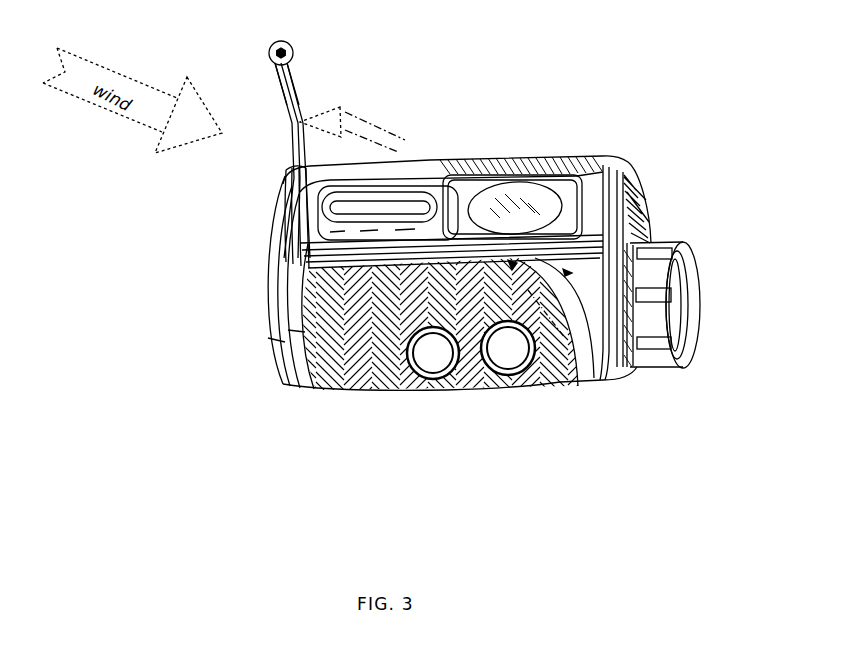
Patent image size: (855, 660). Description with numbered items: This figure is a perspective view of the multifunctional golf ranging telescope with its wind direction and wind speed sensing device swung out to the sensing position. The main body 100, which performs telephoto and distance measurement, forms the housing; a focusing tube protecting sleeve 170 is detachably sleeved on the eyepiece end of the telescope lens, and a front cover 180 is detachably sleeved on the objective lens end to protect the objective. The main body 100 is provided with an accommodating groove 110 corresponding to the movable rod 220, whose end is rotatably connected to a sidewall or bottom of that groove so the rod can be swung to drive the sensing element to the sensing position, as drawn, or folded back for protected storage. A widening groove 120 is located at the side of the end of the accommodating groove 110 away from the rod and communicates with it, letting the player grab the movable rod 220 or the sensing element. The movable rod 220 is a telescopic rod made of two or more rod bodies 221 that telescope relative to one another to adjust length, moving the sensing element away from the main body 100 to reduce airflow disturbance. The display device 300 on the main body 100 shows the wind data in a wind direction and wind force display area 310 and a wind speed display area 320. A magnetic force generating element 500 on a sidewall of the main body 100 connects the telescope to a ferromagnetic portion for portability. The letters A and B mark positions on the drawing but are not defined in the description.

The main body 100 is at (607, 380).
The accommodating groove 110 is at (517, 346).
The widening groove 120 is at (600, 372).
The focusing tube protecting sleeve 170 is at (697, 262).
The front cover 180 is at (266, 327).
The movable rod 220 is at (290, 160).
The rod bodies 221 is at (280, 96).
The display device 300 is at (558, 170).
The wind direction and wind force display area 310 is at (507, 177).
The wind speed display area 320 is at (490, 178).
The magnetic force generating element 500 is at (383, 180).
The pole mount position A is at (279, 234).
The wind sensor head B is at (269, 50).